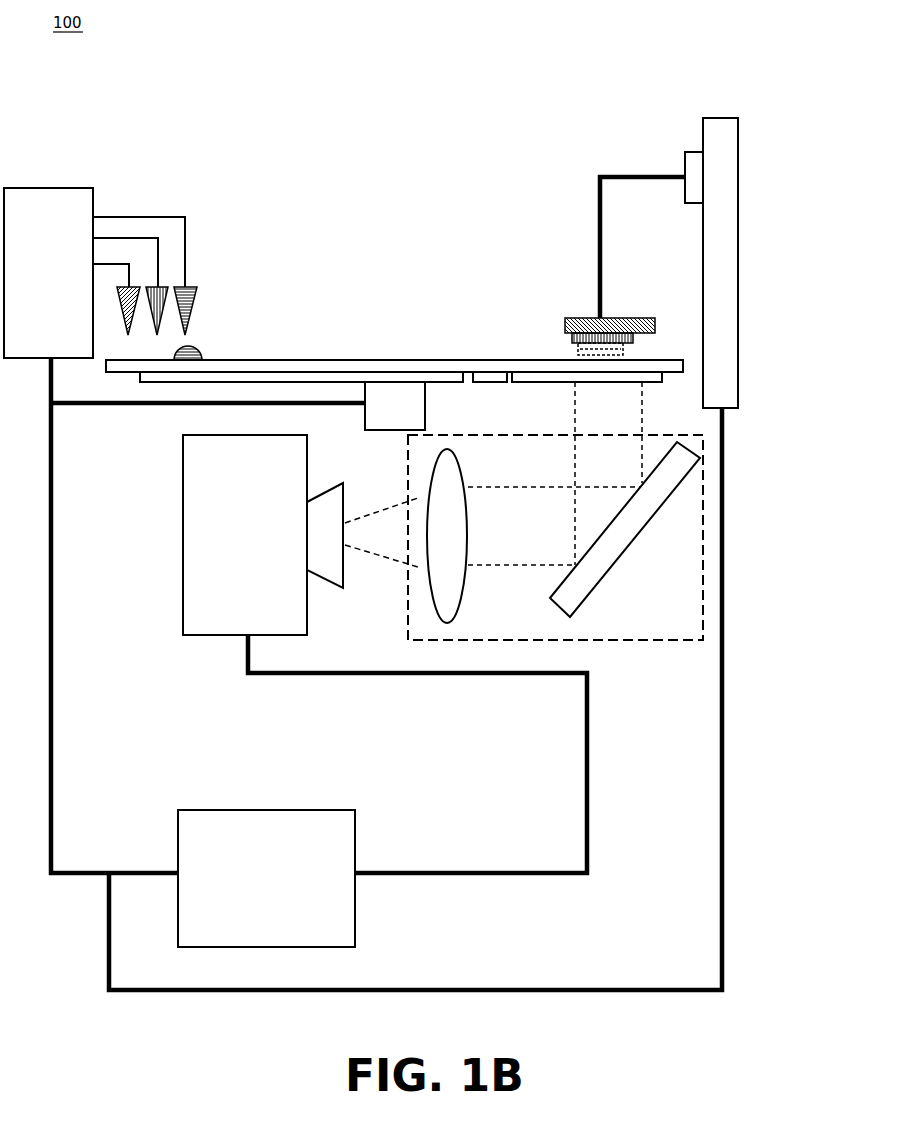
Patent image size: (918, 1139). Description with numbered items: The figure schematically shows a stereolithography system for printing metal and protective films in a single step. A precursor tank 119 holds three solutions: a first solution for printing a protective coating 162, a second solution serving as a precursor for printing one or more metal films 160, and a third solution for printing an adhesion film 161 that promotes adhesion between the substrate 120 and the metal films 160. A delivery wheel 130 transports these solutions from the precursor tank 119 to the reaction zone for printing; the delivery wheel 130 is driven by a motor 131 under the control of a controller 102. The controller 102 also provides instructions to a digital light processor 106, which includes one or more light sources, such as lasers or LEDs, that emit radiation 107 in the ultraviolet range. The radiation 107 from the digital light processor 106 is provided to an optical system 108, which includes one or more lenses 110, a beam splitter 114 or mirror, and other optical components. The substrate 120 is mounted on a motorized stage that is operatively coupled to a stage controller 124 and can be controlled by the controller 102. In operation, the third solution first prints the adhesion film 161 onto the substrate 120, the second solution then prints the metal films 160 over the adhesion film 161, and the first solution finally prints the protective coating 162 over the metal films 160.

The controller 102 is at (290, 808).
The digital light processor 106 is at (189, 643).
The radiation 107 is at (388, 562).
The optical system 108 is at (686, 644).
The lens 110 is at (465, 600).
The beam splitter 114 is at (662, 511).
The precursor tank 119 is at (60, 188).
The substrate 120 is at (647, 351).
The stage controller 124 is at (740, 197).
The delivery wheel 130 is at (452, 356).
The motor 131 is at (428, 404).
The metal film 160 is at (636, 340).
The adhesion film 161 is at (657, 326).
The protective coating 162 is at (624, 354).